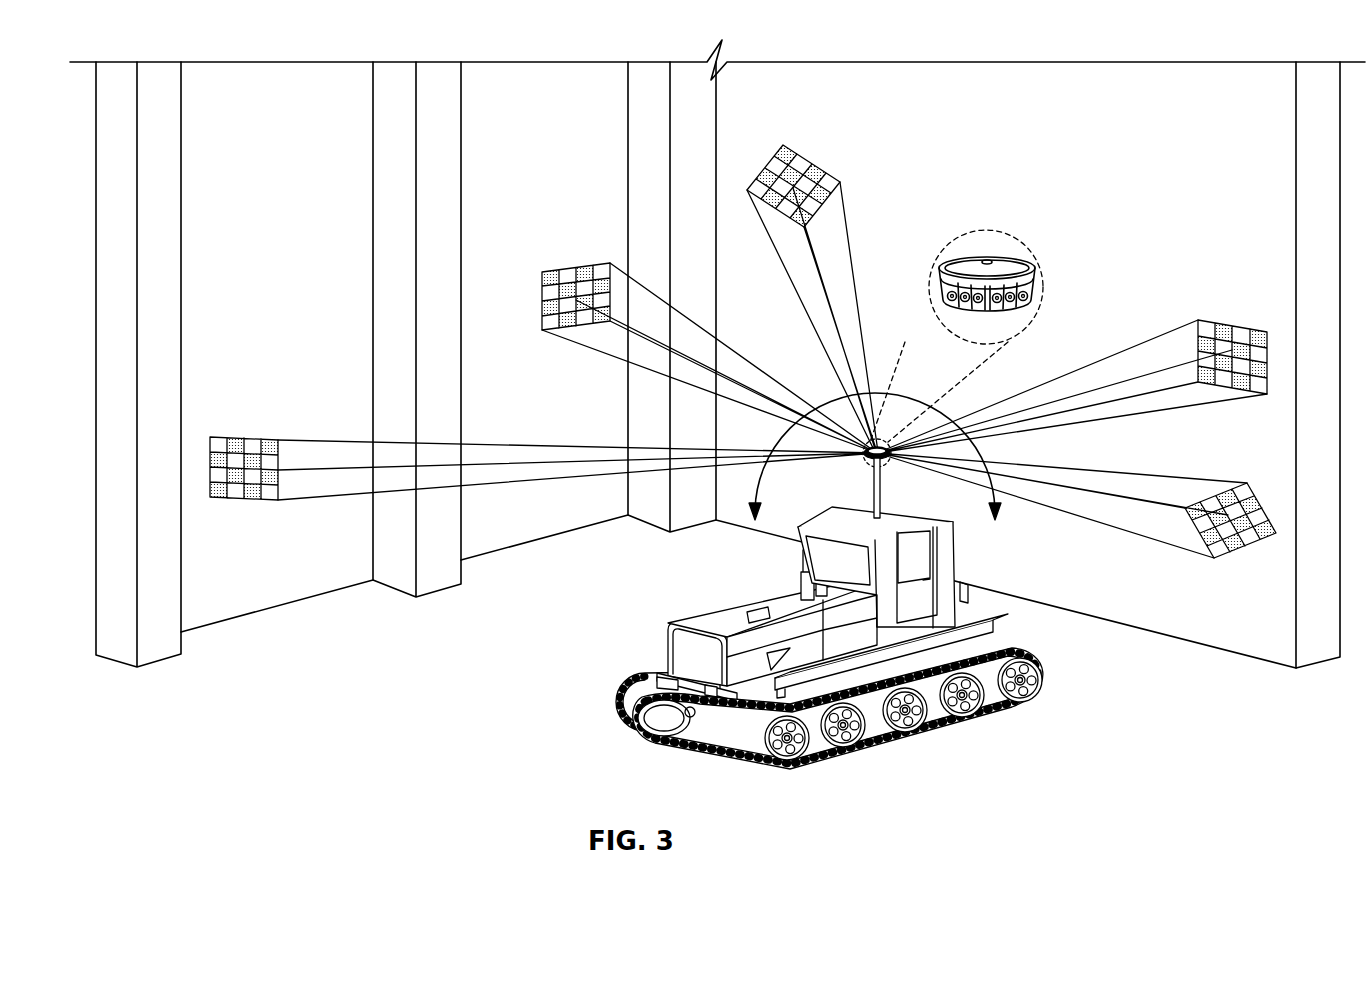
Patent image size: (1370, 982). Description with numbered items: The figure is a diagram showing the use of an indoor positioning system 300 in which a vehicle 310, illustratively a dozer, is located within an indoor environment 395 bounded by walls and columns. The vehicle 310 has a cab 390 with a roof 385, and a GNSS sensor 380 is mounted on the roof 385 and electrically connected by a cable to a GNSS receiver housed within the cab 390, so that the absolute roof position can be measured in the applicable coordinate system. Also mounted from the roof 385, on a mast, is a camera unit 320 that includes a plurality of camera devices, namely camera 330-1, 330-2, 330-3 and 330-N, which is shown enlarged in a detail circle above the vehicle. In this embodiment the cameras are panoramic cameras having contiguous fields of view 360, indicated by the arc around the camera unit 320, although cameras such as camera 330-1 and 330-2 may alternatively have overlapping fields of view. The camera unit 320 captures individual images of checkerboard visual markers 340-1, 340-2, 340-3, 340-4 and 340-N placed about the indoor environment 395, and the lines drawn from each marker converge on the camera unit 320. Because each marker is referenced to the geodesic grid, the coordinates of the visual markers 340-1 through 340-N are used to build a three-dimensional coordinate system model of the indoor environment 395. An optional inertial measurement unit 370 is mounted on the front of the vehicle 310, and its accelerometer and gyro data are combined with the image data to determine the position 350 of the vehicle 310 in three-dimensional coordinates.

The indoor positioning system 300 is at (1057, 35).
The vehicle 310 is at (818, 613).
The camera unit 320 is at (1000, 265).
The camera 330-1 is at (942, 296).
The camera 330-2 is at (978, 293).
The camera 330-3 is at (1027, 294).
The camera 330-N is at (997, 303).
The visual marker 340-1 is at (222, 440).
The visual marker 340-2 is at (550, 272).
The visual marker 340-3 is at (830, 180).
The visual marker 340-4 is at (1208, 327).
The visual marker 340-N is at (1235, 488).
The position 350 is at (920, 770).
The fields of view 360 is at (757, 472).
The inertial measurement unit 370 is at (733, 655).
The GNSS sensor 380 is at (893, 538).
The roof 385 is at (890, 520).
The cab 390 is at (910, 590).
The indoor environment 395 is at (1136, 205).